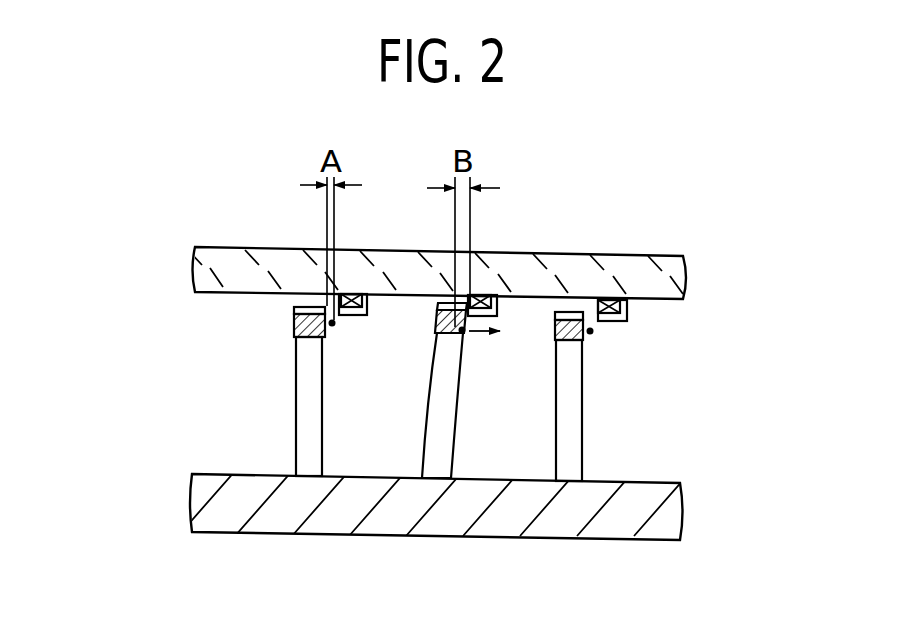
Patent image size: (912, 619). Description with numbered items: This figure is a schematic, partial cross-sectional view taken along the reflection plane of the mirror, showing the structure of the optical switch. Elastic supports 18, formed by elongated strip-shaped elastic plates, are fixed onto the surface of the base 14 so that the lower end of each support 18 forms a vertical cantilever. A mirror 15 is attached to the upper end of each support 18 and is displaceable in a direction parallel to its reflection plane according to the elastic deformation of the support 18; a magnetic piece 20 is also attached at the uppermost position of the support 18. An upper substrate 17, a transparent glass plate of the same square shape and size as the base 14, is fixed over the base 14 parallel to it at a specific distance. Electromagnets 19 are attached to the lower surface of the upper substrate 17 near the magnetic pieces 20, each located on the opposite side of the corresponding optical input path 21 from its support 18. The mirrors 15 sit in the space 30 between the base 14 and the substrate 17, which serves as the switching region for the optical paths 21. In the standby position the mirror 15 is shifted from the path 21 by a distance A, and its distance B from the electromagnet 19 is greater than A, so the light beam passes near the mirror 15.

The base 14 is at (610, 530).
The mirror 15 is at (293, 330).
The upper substrate 17 is at (625, 265).
The elastic support 18 is at (303, 404).
The electromagnet 19 is at (627, 312).
The magnetic piece 20 is at (293, 310).
The optical input path 21 is at (334, 325).
The space 30 is at (637, 395).